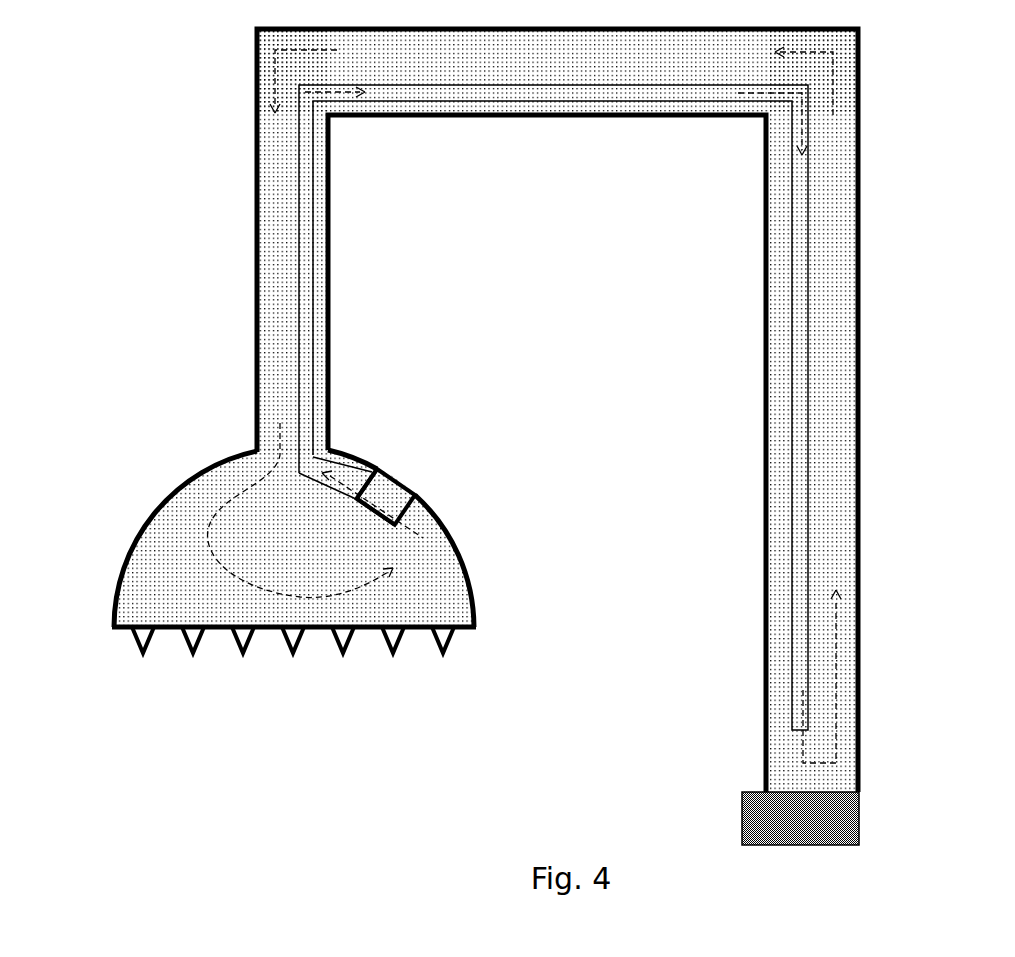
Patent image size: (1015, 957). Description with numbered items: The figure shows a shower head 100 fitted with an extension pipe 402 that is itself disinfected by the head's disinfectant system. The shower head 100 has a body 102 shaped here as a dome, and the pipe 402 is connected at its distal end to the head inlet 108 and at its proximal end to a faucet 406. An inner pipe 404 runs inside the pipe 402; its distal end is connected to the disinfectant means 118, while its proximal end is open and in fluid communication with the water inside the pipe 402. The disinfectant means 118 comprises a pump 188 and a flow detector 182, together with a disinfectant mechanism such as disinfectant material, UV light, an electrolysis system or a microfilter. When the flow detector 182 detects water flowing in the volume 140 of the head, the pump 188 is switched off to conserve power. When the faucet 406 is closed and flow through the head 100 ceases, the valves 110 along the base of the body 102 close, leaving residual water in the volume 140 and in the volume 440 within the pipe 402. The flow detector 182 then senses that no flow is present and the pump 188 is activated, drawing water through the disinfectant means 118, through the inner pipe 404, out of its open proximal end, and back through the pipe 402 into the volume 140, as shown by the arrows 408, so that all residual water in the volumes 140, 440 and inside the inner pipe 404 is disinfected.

The shower head 100 is at (162, 452).
The body 102 is at (140, 542).
The head inlet 108 is at (330, 405).
The valves 110 is at (447, 648).
The disinfectant means 118 is at (390, 468).
The volume 140 is at (200, 523).
The flow detector 182 is at (362, 508).
The pump 188 is at (410, 493).
The pipe 402 is at (257, 105).
The inner pipe 404 is at (473, 100).
The faucet 406 is at (757, 815).
The arrows 408 is at (767, 93).
The volume 440 is at (568, 71).